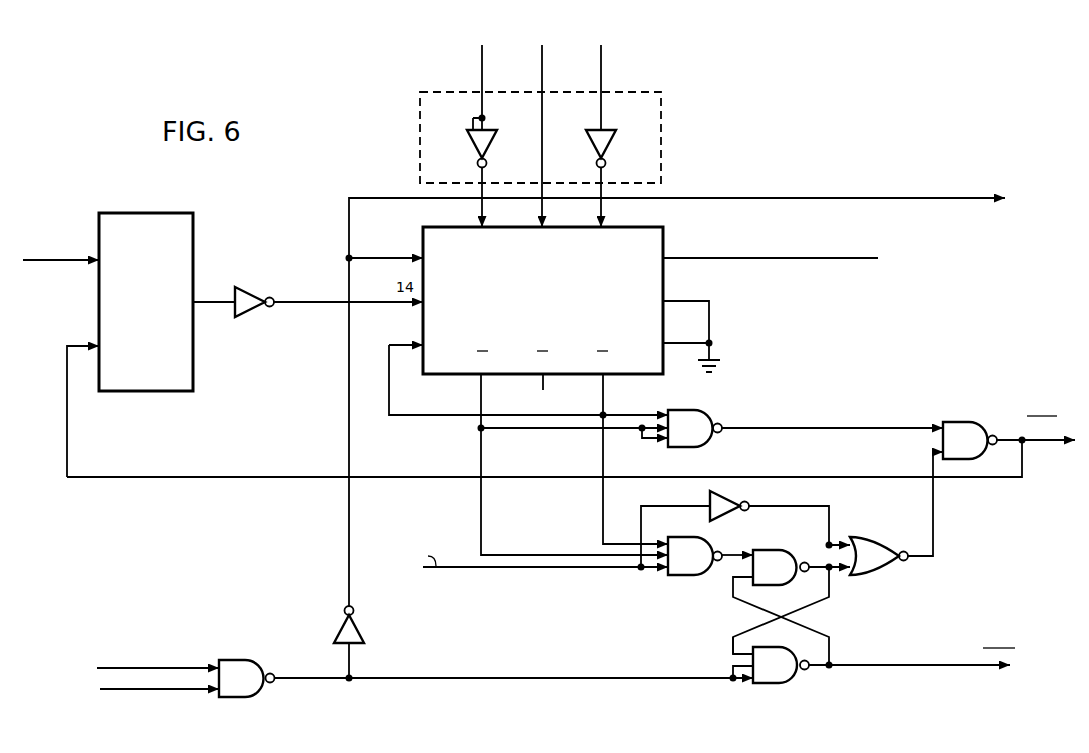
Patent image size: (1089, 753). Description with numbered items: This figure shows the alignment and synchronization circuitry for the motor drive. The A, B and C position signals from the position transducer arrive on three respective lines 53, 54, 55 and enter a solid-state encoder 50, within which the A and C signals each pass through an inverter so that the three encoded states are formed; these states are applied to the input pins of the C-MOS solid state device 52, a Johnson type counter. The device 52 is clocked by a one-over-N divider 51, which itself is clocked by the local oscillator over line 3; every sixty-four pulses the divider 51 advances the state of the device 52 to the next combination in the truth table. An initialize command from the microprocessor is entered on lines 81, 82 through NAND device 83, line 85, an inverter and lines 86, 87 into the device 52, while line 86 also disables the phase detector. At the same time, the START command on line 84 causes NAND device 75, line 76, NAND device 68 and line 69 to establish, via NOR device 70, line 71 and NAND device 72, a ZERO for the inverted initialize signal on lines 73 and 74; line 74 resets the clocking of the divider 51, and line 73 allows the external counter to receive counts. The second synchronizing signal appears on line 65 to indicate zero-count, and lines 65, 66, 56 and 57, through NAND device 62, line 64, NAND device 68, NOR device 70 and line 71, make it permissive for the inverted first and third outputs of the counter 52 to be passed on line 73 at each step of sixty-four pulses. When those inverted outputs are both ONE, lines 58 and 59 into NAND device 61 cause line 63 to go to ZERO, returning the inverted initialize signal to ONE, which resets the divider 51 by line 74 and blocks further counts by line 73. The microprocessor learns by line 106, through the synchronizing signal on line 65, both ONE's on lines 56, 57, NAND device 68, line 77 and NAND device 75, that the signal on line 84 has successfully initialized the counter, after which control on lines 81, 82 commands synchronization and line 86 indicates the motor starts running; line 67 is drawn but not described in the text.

The line 3 is at (68, 263).
The solid-state encoder 50 is at (420, 135).
The 1/N divider 51 is at (193, 237).
The solid-state device 52 is at (665, 237).
The line 53 is at (480, 111).
The line 54 is at (541, 111).
The line 55 is at (600, 111).
The line 56 is at (481, 400).
The line 57 is at (603, 400).
The line 58 is at (389, 384).
The line 59 is at (517, 429).
The NAND device 61 is at (705, 411).
The NAND device 62 is at (687, 535).
The line 63 is at (837, 423).
The line 64 is at (734, 553).
The line 65 is at (516, 569).
The line 66 is at (642, 507).
The inverter output line 67 is at (831, 523).
The NAND device 68 is at (776, 550).
The line 69 is at (834, 572).
The NOR device 70 is at (878, 538).
The line 71 is at (933, 523).
The NAND device 72 is at (978, 421).
The line 73 is at (1046, 443).
The line 74 is at (195, 476).
The NAND device 75 is at (786, 685).
The line 76 is at (829, 645).
The line 77 is at (733, 645).
The line 81 is at (119, 664).
The line 82 is at (122, 691).
The NAND device 83 is at (250, 660).
The line 84 is at (565, 677).
The line 85 is at (350, 665).
The line 86 is at (836, 197).
The line 87 is at (389, 257).
The line 106 is at (917, 666).